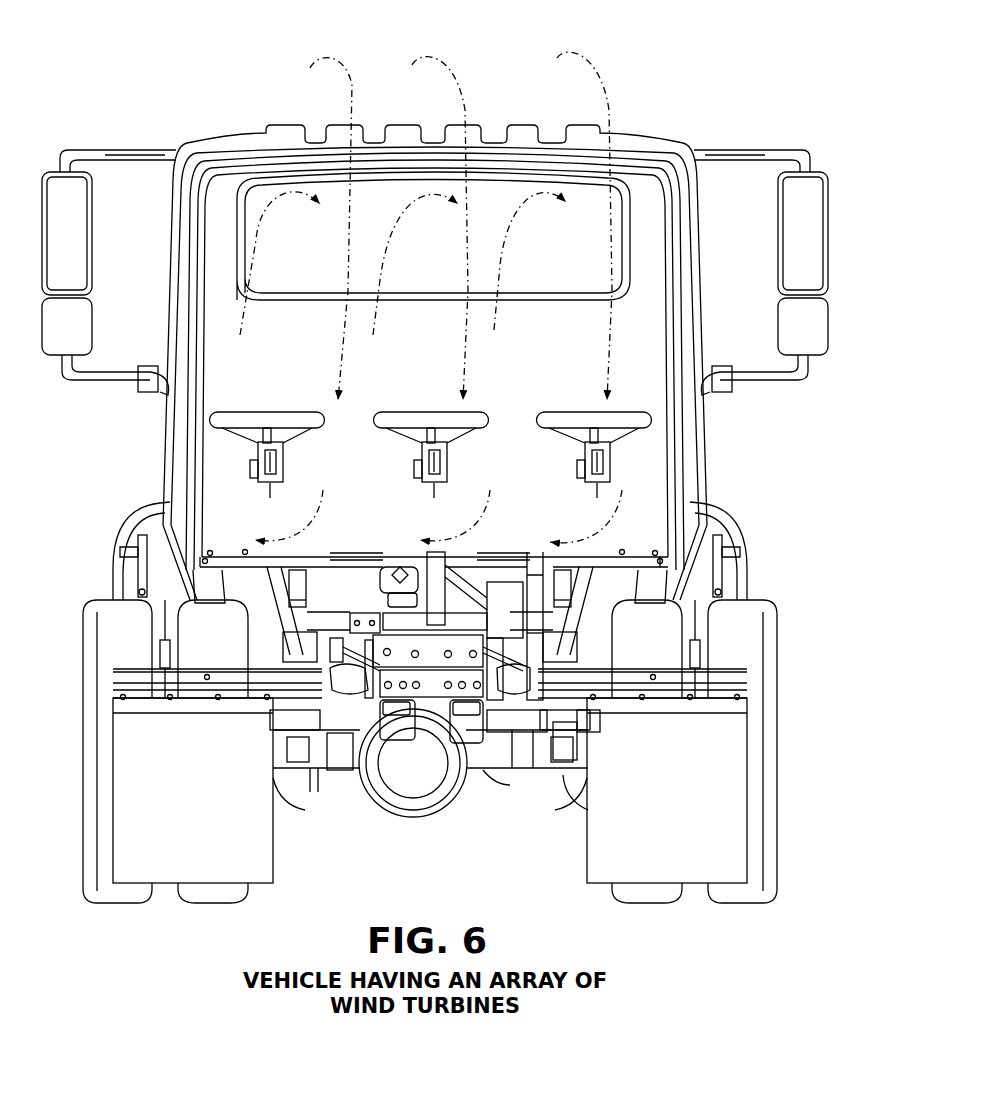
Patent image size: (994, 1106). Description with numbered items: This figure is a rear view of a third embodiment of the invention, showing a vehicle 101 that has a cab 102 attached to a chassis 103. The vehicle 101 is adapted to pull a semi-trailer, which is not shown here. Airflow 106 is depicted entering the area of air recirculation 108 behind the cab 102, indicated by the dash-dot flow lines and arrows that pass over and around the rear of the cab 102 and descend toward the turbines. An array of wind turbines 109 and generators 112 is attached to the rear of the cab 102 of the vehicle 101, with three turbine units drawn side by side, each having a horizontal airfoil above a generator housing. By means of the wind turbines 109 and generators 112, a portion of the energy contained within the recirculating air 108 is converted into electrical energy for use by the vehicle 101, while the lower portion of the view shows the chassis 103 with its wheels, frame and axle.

The vehicle 101 is at (290, 121).
The cab 102 is at (639, 196).
The chassis 103 is at (337, 757).
The airflow 106 is at (458, 78).
The area of air recirculation 108 is at (560, 331).
The wind turbines 109 is at (587, 410).
The generators 112 is at (276, 484).